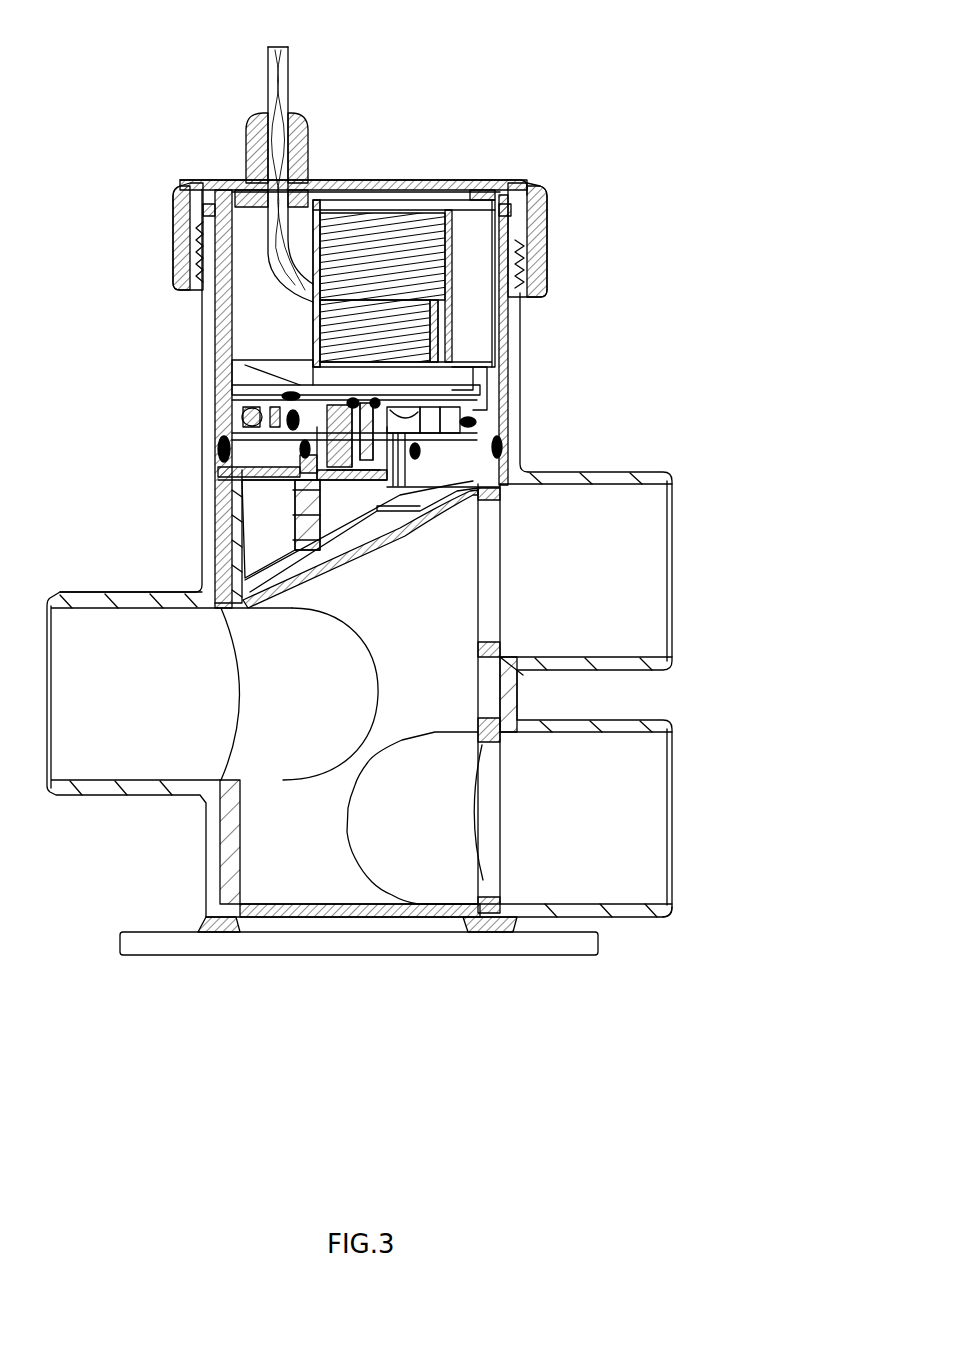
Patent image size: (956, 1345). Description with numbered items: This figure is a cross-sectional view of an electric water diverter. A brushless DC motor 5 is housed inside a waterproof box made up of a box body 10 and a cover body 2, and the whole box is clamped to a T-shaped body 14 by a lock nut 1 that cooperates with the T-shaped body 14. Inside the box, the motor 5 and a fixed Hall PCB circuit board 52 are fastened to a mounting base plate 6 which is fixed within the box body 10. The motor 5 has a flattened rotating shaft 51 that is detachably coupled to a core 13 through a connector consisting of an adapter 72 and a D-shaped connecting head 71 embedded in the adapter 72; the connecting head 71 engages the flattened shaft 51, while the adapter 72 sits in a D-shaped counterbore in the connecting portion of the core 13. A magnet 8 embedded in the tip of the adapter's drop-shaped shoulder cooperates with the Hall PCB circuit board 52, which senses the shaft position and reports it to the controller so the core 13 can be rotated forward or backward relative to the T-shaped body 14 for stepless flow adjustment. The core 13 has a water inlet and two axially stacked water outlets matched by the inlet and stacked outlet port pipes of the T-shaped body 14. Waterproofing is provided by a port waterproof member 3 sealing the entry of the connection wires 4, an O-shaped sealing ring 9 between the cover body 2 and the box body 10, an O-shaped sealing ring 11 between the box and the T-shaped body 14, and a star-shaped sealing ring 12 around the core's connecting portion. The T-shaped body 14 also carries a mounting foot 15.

The lock nut 1 is at (543, 213).
The cover body 2 is at (485, 187).
The port waterproof member 3 is at (303, 140).
The connection wires 4 is at (280, 83).
The brushless DC motor 5 is at (410, 187).
The mounting base plate 6 is at (468, 402).
The magnet 8 is at (222, 442).
The O-shaped sealing ring 9 is at (503, 210).
The box body 10 is at (493, 327).
The O-shaped sealing ring 11 is at (270, 440).
The star-shaped sealing ring 12 is at (303, 452).
The core 13 is at (230, 517).
The T-shaped body 14 is at (513, 345).
The mounting foot 15 is at (397, 947).
The rotating shaft 51 is at (500, 442).
The Hall PCB circuit board 52 is at (288, 393).
The connecting head 71 is at (413, 448).
The adapter 72 is at (350, 405).